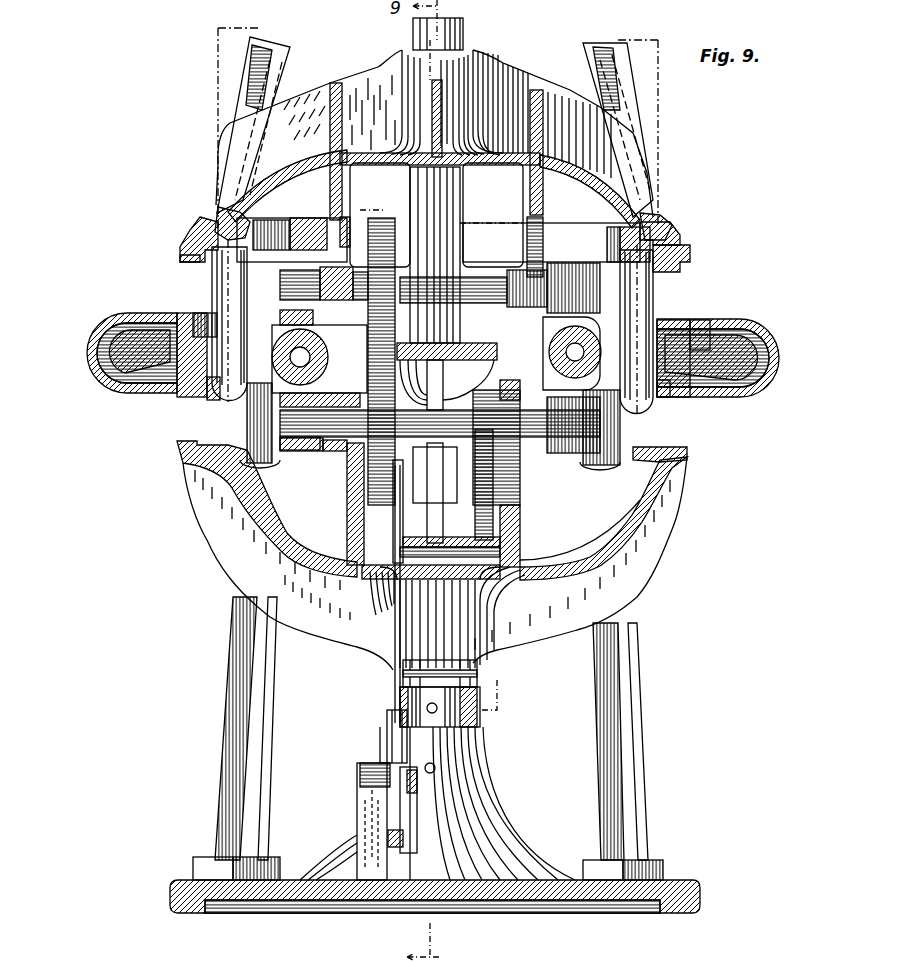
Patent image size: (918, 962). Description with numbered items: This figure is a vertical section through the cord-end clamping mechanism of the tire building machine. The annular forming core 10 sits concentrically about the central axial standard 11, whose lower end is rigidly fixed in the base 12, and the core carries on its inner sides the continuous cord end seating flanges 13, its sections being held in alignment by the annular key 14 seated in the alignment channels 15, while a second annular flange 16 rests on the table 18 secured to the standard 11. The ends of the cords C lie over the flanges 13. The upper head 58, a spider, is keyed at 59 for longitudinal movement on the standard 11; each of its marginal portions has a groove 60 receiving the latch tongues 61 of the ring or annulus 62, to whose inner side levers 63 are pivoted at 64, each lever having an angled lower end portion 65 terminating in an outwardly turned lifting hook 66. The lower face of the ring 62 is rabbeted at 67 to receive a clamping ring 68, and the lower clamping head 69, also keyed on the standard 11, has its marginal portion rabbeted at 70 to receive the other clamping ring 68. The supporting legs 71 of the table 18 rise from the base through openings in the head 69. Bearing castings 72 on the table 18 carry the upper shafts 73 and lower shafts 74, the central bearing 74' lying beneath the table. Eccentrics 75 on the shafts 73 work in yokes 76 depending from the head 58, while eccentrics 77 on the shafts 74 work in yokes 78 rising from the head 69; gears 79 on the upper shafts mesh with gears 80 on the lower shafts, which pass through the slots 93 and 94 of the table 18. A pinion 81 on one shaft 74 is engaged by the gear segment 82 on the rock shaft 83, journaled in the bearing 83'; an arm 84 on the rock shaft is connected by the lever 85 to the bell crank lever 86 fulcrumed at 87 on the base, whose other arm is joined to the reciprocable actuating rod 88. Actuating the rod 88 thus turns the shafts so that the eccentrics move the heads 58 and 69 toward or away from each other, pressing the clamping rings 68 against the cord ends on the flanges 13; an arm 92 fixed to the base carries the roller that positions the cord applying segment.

The annular forming core 10 is at (773, 337).
The central axial standard 11 is at (457, 680).
The base 12 is at (483, 775).
The cord end seating flanges 13 is at (173, 320).
The annular key 14 is at (210, 323).
The alignment channels 15 is at (693, 347).
The second annular flange 16 is at (180, 380).
The table 18 is at (463, 277).
The upper head 58 is at (573, 118).
The key 59 is at (470, 52).
The groove 60 is at (230, 210).
The latch tongues 61 is at (210, 223).
The ring or annulus 62 is at (677, 247).
The levers 63 is at (237, 70).
The pivot 64 is at (237, 227).
The lower end portion 65 is at (217, 273).
The lifting hook 66 is at (217, 393).
The rabbet 67 is at (187, 263).
The clamping ring 68 is at (670, 323).
The lower clamping head 69 is at (650, 478).
The rabbet 70 is at (687, 460).
The supporting legs 71 is at (617, 648).
The bearing castings 72 is at (272, 327).
The shafts 73 is at (382, 217).
The shafts 74 is at (310, 461).
The central bearing 74' is at (337, 473).
The eccentric 75 is at (327, 220).
The yokes 76 is at (340, 150).
The eccentrics 77 is at (362, 483).
The yokes 78 is at (520, 523).
The gear 79 is at (388, 215).
The gears 80 is at (410, 507).
The pinion 81 is at (470, 417).
The gear segment 82 is at (577, 547).
The rock shaft 83 is at (432, 560).
The bearing 83' is at (509, 616).
The arm 84 is at (390, 598).
The lever 85 is at (395, 683).
The bell crank lever 86 is at (400, 742).
The fulcrum 87 is at (417, 783).
The reciprocable actuating rod 88 is at (388, 837).
The arm 92 is at (477, 717).
The slot 93 is at (545, 357).
The slot 94 is at (350, 353).
The cords C is at (88, 358).